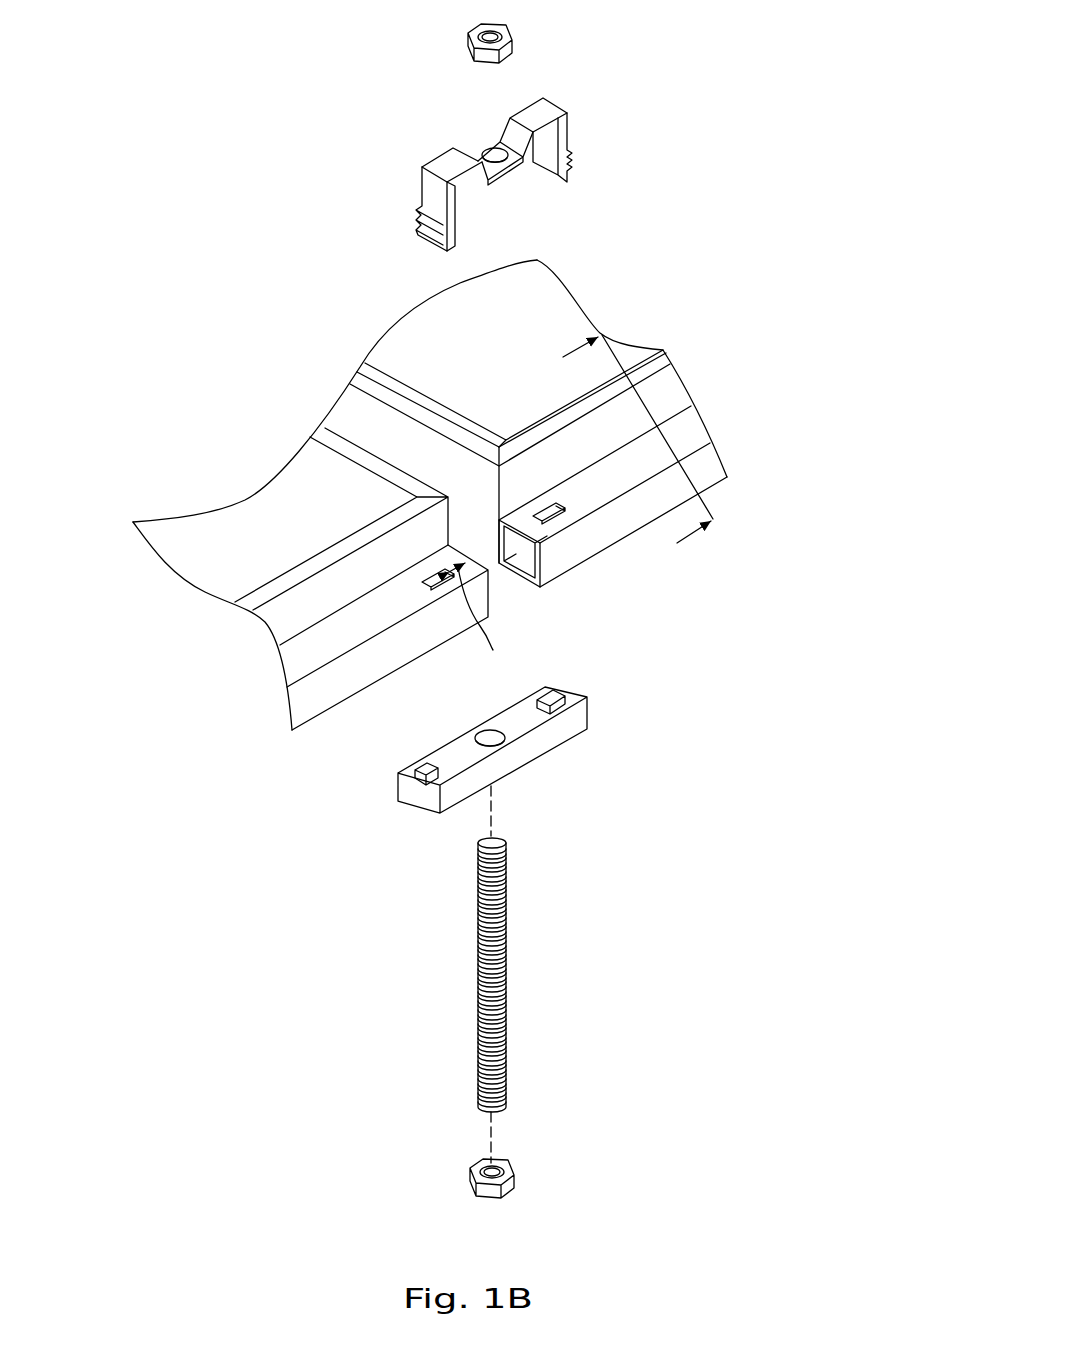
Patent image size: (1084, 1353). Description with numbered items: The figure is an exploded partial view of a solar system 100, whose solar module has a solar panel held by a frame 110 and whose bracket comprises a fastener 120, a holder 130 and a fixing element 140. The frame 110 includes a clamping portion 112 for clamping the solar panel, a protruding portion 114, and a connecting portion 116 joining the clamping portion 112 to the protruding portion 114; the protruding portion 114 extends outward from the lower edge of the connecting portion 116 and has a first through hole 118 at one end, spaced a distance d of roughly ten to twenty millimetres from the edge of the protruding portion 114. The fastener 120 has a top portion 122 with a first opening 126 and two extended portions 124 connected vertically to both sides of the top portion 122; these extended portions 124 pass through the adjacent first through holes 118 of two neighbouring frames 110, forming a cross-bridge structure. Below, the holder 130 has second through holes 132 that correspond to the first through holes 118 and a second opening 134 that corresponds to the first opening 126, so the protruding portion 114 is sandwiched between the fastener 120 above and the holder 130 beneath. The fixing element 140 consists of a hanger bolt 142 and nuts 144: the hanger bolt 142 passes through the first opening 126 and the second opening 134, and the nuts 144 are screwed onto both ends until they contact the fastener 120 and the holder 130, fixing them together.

The solar system 100 is at (212, 280).
The frame 110 is at (812, 333).
The clamping portion 112 is at (676, 352).
The protruding portion 114 is at (703, 430).
The connecting portion 116 is at (687, 395).
The first through hole 118 is at (568, 514).
The fastener 120 is at (561, 97).
The top portion 122 is at (450, 162).
The extended portion 124 is at (432, 196).
The first opening 126 is at (503, 165).
The holder 130 is at (550, 766).
The second through hole 132 is at (545, 699).
The second opening 134 is at (478, 736).
The fixing element 140 is at (648, 1090).
The hanger bolt 142 is at (508, 1080).
The nut 144 is at (512, 35).